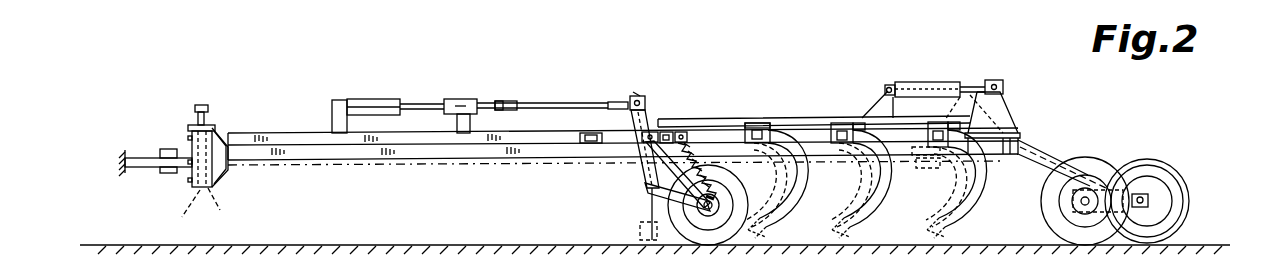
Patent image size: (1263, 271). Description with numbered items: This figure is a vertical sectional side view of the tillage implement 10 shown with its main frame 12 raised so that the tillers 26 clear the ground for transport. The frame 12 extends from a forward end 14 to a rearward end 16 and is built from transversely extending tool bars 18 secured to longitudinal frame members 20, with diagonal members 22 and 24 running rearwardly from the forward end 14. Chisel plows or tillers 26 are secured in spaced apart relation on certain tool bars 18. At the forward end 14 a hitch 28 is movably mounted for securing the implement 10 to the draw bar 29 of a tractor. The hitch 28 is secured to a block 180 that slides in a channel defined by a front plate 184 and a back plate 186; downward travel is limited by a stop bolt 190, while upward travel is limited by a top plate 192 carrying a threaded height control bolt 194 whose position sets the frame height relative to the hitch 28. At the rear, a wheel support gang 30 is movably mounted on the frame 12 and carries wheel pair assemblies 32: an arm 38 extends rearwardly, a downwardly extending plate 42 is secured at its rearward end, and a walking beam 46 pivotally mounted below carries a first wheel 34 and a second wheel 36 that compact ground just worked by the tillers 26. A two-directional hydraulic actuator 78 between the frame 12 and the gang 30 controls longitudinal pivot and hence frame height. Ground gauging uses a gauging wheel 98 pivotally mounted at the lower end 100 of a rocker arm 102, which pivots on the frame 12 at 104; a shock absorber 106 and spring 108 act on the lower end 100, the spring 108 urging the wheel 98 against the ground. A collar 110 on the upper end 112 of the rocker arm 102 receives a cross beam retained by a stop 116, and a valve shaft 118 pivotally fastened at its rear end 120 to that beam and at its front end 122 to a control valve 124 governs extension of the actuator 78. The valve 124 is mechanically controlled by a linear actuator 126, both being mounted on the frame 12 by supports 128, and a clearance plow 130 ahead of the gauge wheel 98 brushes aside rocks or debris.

The tillage implement 10 is at (815, 60).
The main frame 12 is at (366, 166).
The forward end 14 is at (230, 128).
The rearward end 16 is at (935, 116).
The tool bars 18 is at (668, 132).
The longitudinal frame members 20 is at (601, 132).
The diagonal member 22 is at (427, 161).
The diagonal member 24 is at (283, 110).
The tillers 26 is at (797, 210).
The hitch 28 is at (160, 157).
The draw bar 29 is at (137, 172).
The wheel support gang 30 is at (1033, 115).
The wheel pair assembly 32 is at (1124, 135).
The first wheel 34 is at (1180, 212).
The second wheel 36 is at (1079, 157).
The arm 38 is at (1042, 149).
The plate 42 is at (1127, 165).
The walking beam 46 is at (1146, 200).
The hydraulic actuator 78 is at (964, 80).
The gauging wheel 98 is at (737, 240).
The lower end 100 is at (707, 216).
The rocker arm 102 is at (640, 181).
The pivot mounting 104 is at (655, 130).
The shock absorber 106 is at (690, 134).
The spring 108 is at (728, 188).
The collar 110 is at (642, 96).
The upper end 112 is at (651, 110).
The stop 116 is at (636, 95).
The valve shaft 118 is at (540, 103).
The rear end 120 is at (616, 101).
The front end 122 is at (504, 110).
The control valve 124 is at (469, 99).
The linear actuator 126 is at (372, 100).
The supports 128 is at (336, 102).
The clearance plow 130 is at (640, 233).
The block 180 is at (228, 165).
The front plate 184 is at (187, 176).
The back plate 186 is at (221, 210).
The stop bolt 190 is at (186, 216).
The top plate 192 is at (193, 127).
The height control bolt 194 is at (206, 104).